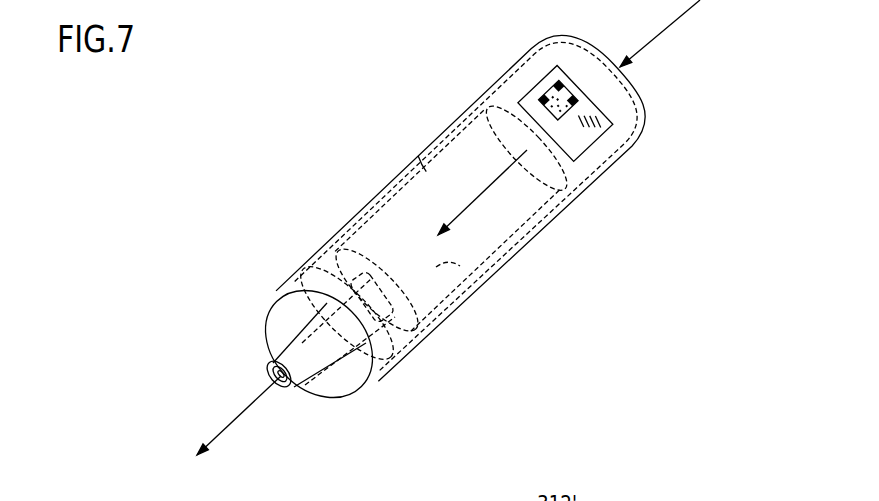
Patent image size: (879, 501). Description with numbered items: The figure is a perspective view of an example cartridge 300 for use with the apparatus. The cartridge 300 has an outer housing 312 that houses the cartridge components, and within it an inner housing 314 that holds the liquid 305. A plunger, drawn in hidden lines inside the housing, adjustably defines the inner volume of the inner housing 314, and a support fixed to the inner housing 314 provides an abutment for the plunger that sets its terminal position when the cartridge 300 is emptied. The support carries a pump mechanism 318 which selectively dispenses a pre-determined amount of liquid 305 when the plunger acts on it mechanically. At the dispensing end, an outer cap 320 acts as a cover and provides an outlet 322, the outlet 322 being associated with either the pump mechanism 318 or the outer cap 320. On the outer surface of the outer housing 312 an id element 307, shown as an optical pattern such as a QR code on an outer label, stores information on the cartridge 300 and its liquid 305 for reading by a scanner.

The cartridge 300 is at (428, 228).
The liquid 305 is at (440, 264).
The id element 307 is at (528, 102).
The outer housing 312 is at (548, 227).
The inner housing 314 is at (420, 157).
The pump mechanism 318 is at (310, 346).
The outer cap 320 is at (343, 395).
The outlet 322 is at (280, 388).